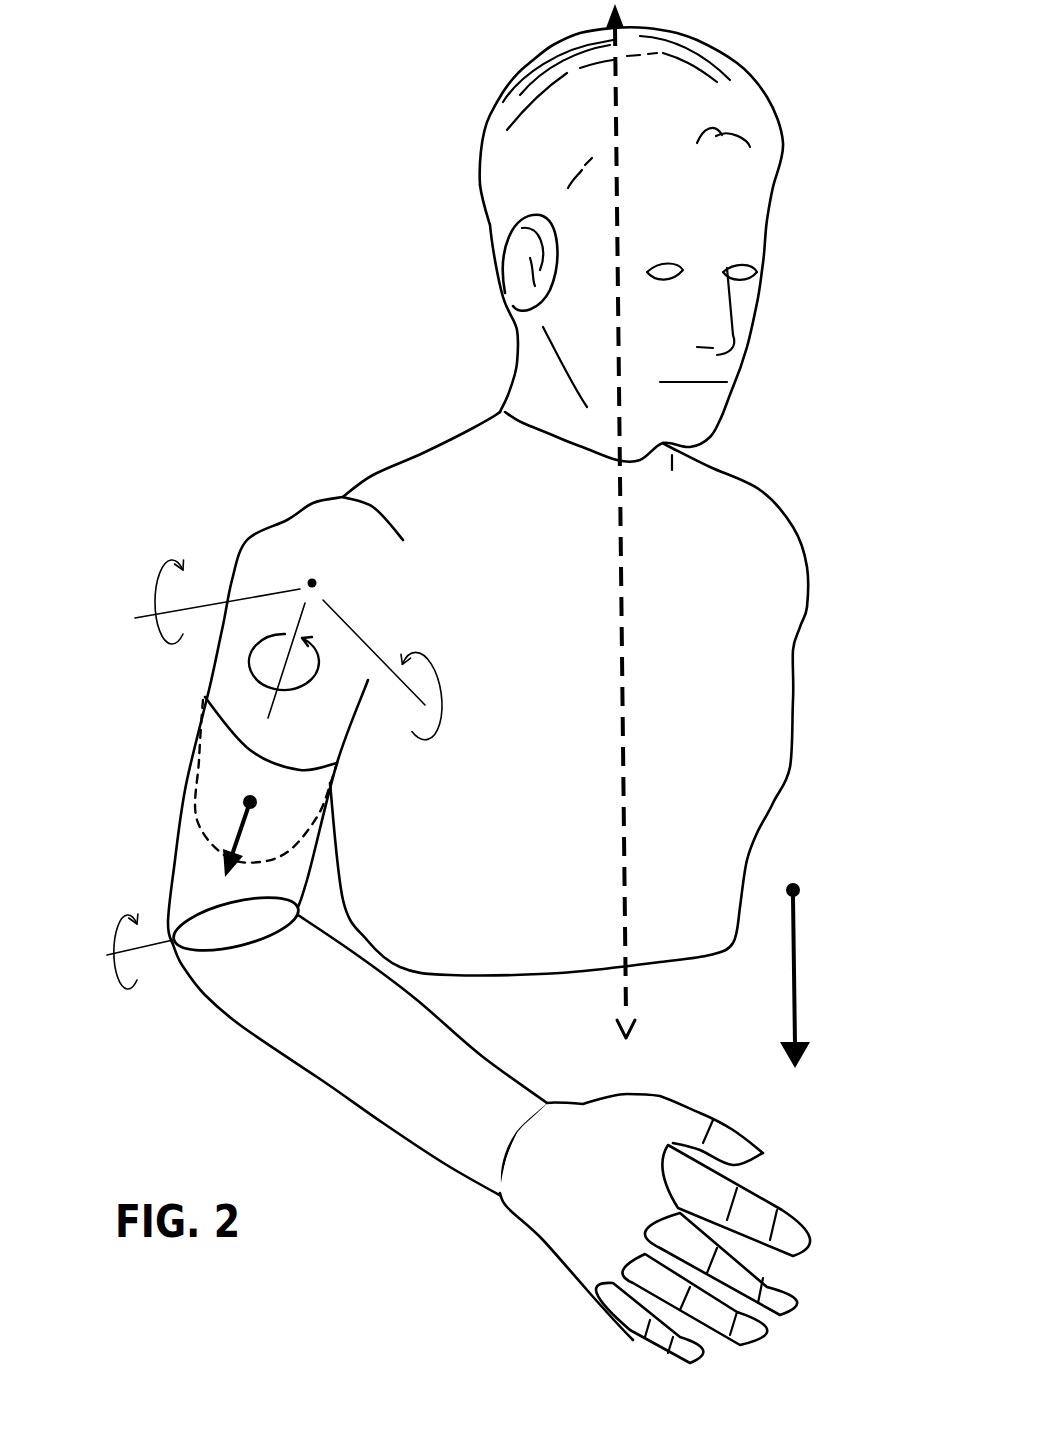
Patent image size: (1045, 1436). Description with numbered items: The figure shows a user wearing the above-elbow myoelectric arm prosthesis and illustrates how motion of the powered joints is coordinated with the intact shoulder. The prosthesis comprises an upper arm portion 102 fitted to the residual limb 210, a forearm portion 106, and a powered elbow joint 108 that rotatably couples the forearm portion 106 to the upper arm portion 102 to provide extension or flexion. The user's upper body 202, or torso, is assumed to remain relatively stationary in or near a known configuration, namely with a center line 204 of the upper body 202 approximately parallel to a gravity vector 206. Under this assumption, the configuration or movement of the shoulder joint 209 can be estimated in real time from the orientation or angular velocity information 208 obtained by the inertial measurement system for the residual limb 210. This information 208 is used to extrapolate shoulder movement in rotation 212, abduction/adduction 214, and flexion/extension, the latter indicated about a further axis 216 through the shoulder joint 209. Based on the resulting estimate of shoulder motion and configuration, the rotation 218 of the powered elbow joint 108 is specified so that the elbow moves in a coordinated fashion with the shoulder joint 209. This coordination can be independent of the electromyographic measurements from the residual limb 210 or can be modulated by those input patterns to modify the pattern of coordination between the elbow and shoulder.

The upper arm portion 102 is at (175, 885).
The forearm portion 106 is at (373, 1117).
The powered elbow joint 108 is at (193, 952).
The upper body 202 is at (772, 497).
The center line 204 is at (620, 985).
The gravity vector 206 is at (788, 965).
The orientation or angular velocity information 208 is at (233, 839).
The shoulder joint 209 is at (312, 583).
The residual limb 210 is at (200, 823).
The rotation 212 is at (270, 710).
The abduction/adduction 214 is at (367, 635).
The rotation about first axis 216 is at (215, 602).
The rotation 218 is at (107, 955).